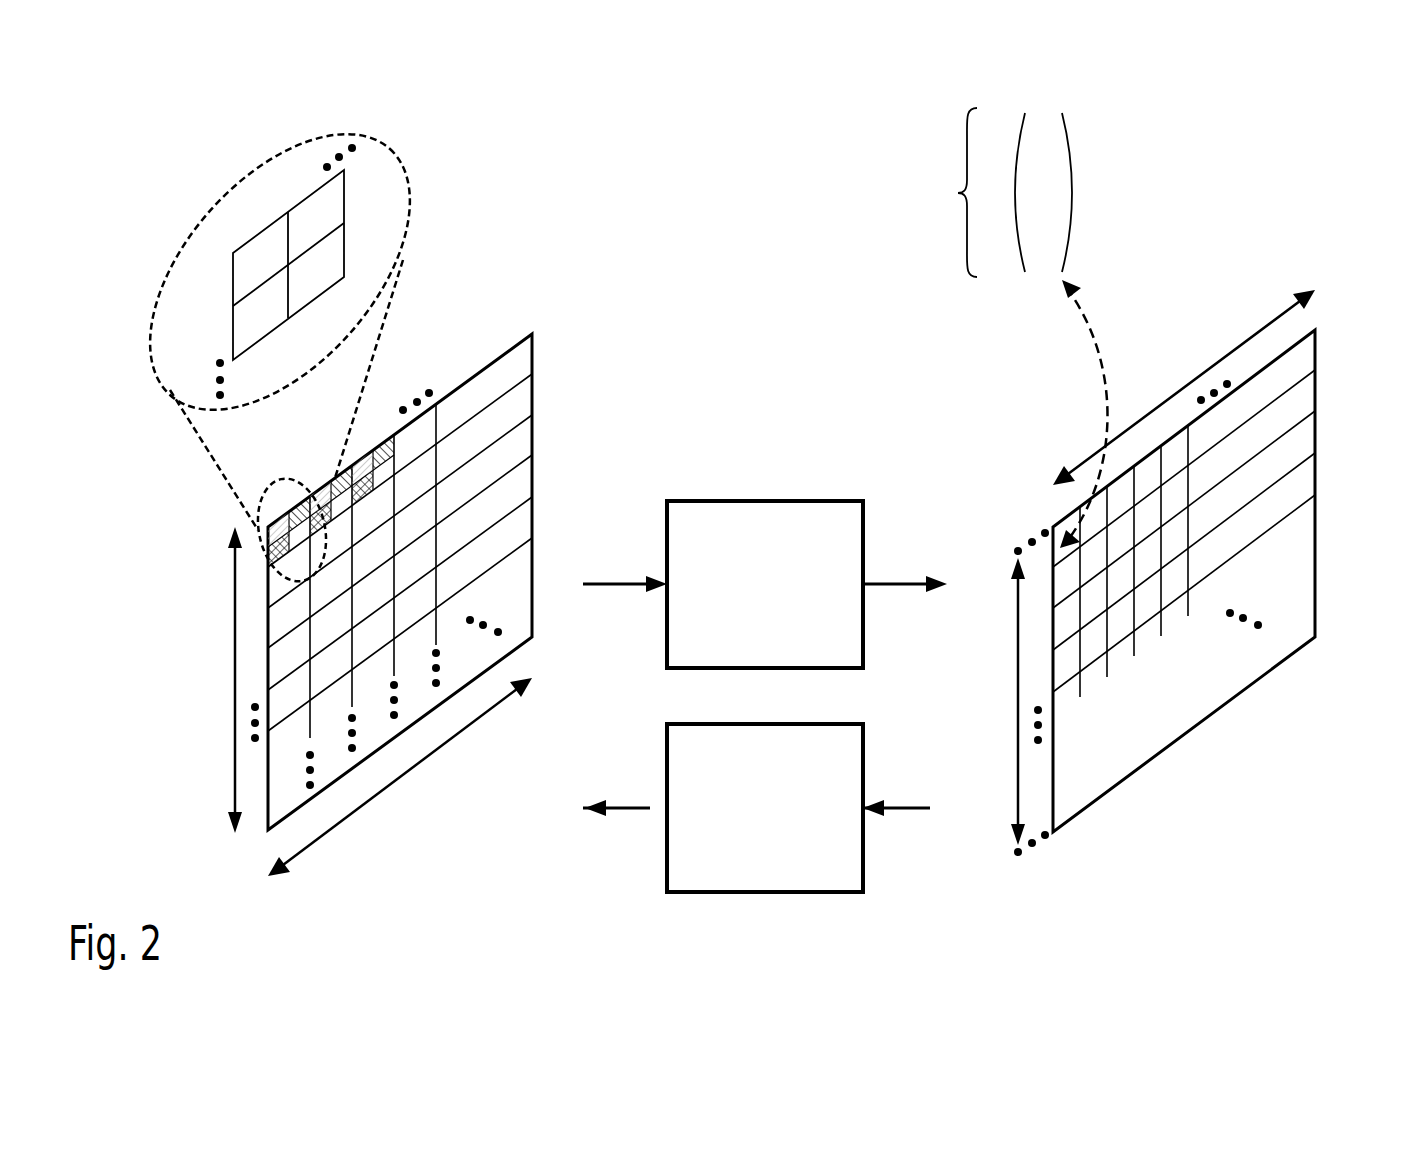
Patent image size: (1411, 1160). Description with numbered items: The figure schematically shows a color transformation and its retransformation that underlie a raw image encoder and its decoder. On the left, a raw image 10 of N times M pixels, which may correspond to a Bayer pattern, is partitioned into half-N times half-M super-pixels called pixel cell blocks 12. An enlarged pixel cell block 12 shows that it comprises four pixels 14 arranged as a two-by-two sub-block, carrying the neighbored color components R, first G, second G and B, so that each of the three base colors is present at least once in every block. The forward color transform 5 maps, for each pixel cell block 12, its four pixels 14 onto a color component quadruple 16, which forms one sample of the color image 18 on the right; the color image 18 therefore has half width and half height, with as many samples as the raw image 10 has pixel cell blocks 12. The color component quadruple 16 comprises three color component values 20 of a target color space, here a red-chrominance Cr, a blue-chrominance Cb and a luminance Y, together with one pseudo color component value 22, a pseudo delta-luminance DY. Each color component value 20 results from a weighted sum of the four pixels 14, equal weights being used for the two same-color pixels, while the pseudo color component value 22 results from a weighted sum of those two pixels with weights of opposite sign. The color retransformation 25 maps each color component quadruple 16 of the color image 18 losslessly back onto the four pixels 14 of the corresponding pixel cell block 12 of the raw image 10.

The forward color transform 5 is at (765, 500).
The raw image 10 is at (533, 337).
The pixel cell block 12 is at (280, 305).
The pixel 14 is at (345, 250).
The color component quadruple 16 is at (1046, 203).
The color image 18 is at (1316, 337).
The color component values 20 is at (952, 192).
The pseudo color component value 22 is at (996, 280).
The color retransformation 25 is at (765, 893).